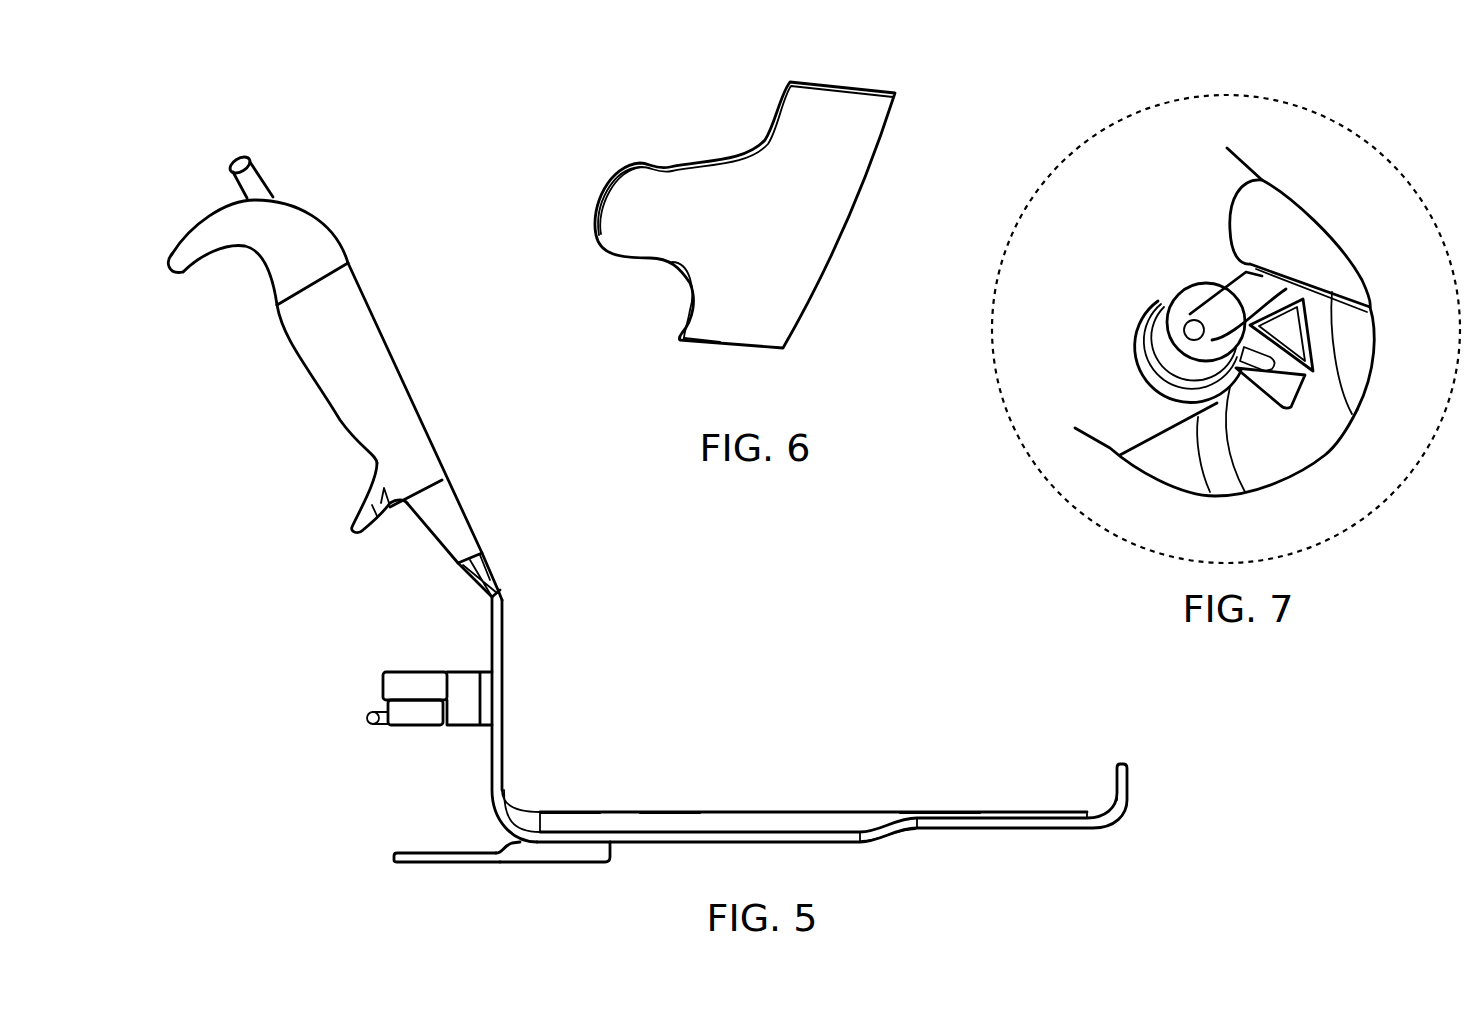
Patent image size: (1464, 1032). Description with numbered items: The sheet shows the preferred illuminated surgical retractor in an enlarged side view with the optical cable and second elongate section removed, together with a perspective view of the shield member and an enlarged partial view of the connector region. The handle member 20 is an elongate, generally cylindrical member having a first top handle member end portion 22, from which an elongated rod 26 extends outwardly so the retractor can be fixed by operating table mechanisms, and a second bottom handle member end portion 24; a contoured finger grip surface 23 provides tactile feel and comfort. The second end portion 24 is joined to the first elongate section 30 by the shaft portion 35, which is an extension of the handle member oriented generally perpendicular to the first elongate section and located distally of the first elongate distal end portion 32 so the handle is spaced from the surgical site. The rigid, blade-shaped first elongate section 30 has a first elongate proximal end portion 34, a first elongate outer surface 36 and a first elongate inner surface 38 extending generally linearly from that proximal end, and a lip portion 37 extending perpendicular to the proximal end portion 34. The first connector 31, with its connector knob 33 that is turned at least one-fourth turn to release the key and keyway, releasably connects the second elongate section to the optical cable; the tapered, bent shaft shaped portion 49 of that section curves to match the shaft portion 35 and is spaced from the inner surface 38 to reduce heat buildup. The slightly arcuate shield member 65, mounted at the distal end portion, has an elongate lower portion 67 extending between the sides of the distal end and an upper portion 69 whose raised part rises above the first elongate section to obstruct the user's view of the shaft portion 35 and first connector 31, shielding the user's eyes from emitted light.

In FIG. 5, the handle member 20 is at (330, 351).
In FIG. 7, the handle member 20 is at (1158, 450).
In FIG. 5, the first top handle member end portion 22 is at (275, 282).
In FIG. 5, the finger grip surface 23 is at (355, 505).
In FIG. 5, the second bottom handle member end portion 24 is at (453, 517).
In FIG. 5, the elongated rod 26 is at (255, 170).
In FIG. 5, the first elongate section 30 is at (832, 804).
In FIG. 5, the first connector 31 is at (398, 713).
In FIG. 7, the first connector 31 is at (1141, 332).
In FIG. 5, the first elongate distal end portion 32 is at (598, 820).
In FIG. 5, the connector knob 33 is at (407, 717).
In FIG. 7, the connector knob 33 is at (1162, 338).
In FIG. 5, the first elongate proximal end portion 34 is at (937, 810).
In FIG. 5, the shaft portion 35 is at (493, 652).
In FIG. 7, the shaft portion 35 is at (1311, 418).
In FIG. 5, the first elongate outer surface 36 is at (660, 826).
In FIG. 5, the lip portion 37 is at (1115, 773).
In FIG. 5, the first elongate inner surface 38 is at (910, 828).
In FIG. 7, the shaft shaped portion 49 is at (1221, 296).
In FIG. 5, the shield member 65 is at (540, 863).
In FIG. 6, the shield member 65 is at (700, 343).
In FIG. 7, the shield member 65 is at (1289, 238).
In FIG. 5, the elongate lower portion 67 is at (595, 853).
In FIG. 6, the elongate lower portion 67 is at (812, 242).
In FIG. 5, the upper portion 69 is at (410, 862).
In FIG. 6, the upper portion 69 is at (622, 235).